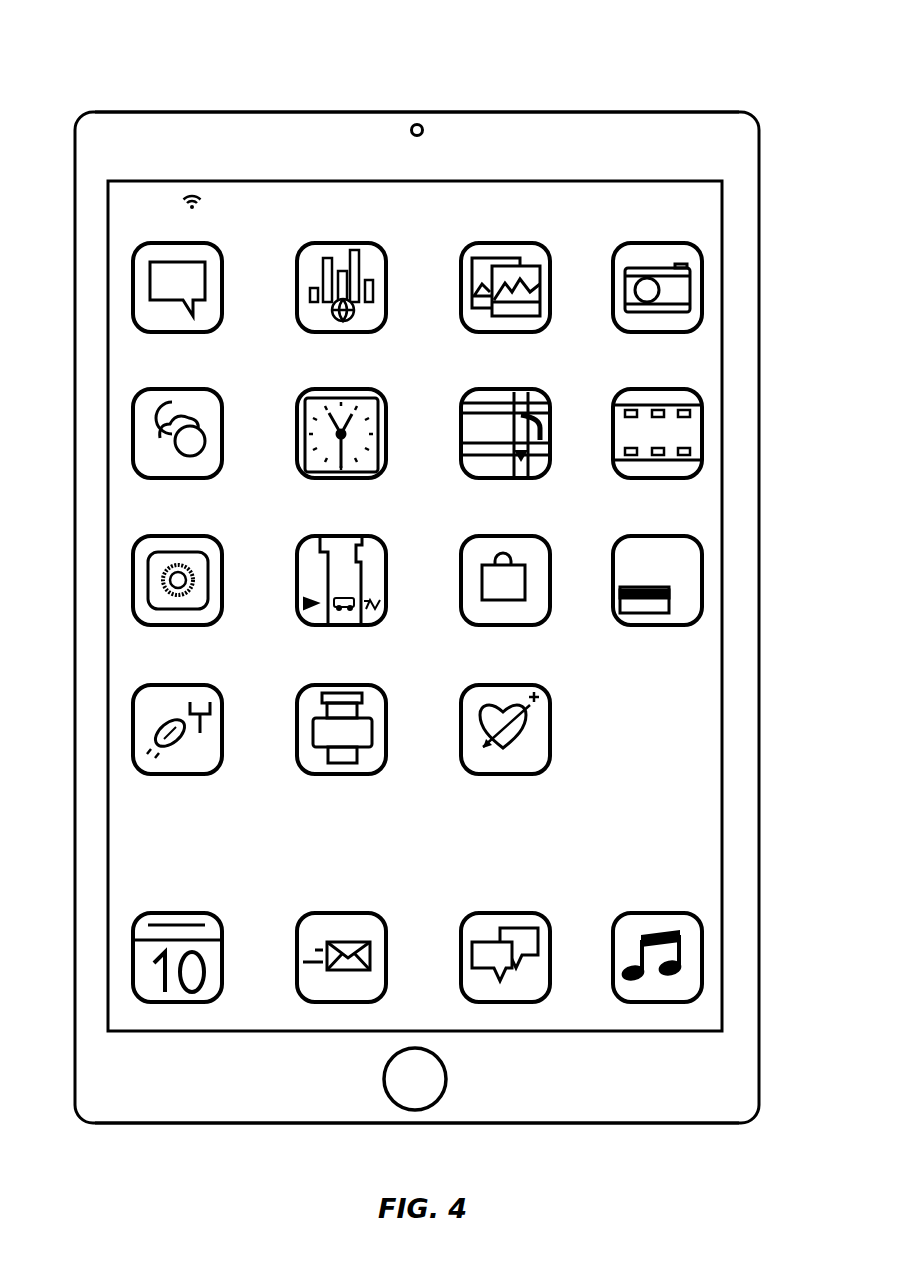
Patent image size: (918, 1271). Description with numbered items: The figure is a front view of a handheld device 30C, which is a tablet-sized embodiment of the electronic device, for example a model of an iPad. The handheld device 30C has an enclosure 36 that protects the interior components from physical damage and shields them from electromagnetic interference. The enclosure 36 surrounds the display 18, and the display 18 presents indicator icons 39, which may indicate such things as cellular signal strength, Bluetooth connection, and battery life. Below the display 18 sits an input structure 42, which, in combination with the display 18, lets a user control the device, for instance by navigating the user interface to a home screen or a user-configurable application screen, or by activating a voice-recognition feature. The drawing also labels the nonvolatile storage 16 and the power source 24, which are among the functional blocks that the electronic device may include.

The handheld device 30C is at (89, 64).
The nonvolatile storage 16 is at (137, 112).
The enclosure 36 is at (678, 112).
The display 18 is at (730, 686).
The indicator icons 39 is at (418, 250).
The input structures 42 is at (447, 1080).
The power source 24 is at (418, 1125).